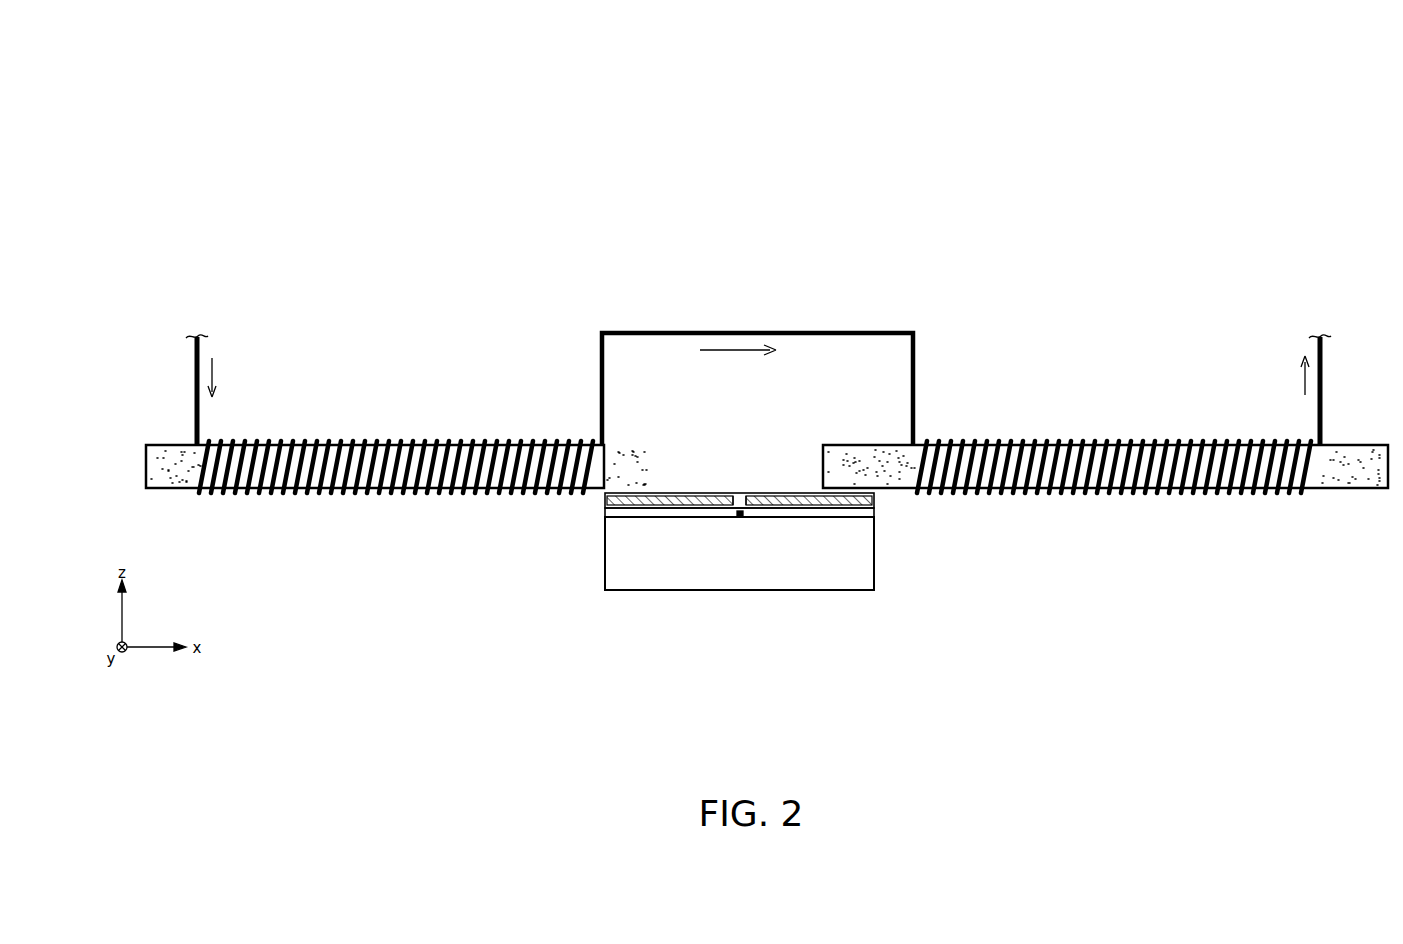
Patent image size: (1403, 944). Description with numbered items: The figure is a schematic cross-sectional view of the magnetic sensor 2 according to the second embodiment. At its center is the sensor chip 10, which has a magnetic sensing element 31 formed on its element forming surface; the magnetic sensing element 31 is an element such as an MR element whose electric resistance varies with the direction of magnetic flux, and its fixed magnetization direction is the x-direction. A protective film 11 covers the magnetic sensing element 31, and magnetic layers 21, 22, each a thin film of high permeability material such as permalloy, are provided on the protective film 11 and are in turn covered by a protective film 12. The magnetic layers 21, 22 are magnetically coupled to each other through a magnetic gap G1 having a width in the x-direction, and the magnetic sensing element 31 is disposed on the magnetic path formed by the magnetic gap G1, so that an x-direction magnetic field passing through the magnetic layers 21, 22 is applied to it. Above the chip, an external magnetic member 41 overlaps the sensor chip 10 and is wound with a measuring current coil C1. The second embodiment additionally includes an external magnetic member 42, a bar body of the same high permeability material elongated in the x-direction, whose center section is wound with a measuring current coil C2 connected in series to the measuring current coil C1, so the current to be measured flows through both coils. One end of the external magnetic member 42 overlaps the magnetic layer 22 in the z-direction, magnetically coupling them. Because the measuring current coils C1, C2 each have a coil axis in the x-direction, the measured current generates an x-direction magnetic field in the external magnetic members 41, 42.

The magnetic sensor 2 is at (1187, 120).
The sensor chip 10 is at (862, 556).
The protective film 11 is at (866, 512).
The protective film 12 is at (852, 492).
The magnetic layer 21 is at (692, 496).
The magnetic layer 22 is at (793, 496).
The magnetic gap G1 is at (741, 481).
The magnetic sensing element 31 is at (741, 518).
The external magnetic member 41 is at (165, 452).
The external magnetic member 42 is at (1370, 455).
The measuring current coil C1 is at (421, 491).
The measuring current coil C2 is at (1144, 491).